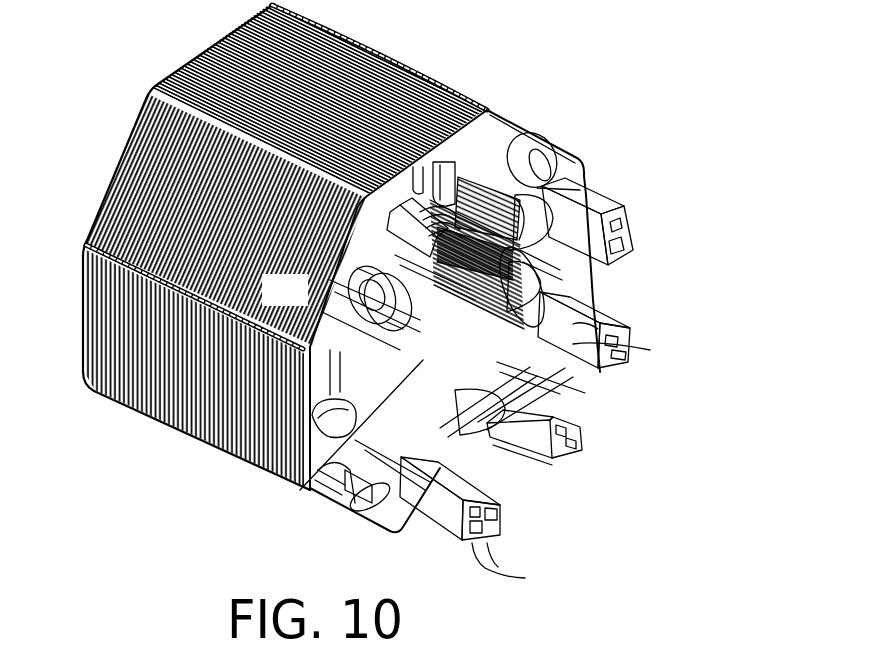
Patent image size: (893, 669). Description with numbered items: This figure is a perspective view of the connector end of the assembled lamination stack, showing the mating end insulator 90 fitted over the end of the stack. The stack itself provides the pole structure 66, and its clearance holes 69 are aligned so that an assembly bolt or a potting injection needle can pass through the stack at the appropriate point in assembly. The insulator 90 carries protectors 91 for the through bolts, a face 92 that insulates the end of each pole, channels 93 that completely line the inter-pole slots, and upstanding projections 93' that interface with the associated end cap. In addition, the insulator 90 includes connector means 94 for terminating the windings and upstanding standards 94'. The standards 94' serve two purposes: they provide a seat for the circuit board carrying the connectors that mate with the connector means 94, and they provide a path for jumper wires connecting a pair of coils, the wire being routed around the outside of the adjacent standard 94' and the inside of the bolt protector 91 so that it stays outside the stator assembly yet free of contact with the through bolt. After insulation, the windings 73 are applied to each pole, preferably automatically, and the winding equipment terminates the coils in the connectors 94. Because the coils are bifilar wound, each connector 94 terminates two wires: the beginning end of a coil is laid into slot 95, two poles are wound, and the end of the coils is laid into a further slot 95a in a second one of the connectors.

The pole structure 66 is at (563, 380).
The clearance holes 69 is at (430, 155).
The windings 73 is at (345, 300).
The insulator 90 is at (577, 275).
The protectors 91 is at (307, 430).
The face 92 is at (522, 128).
The channels 93 is at (534, 466).
The upstanding projections 93' is at (351, 521).
The connector means 94 is at (588, 454).
The upstanding standards 94' is at (310, 514).
The slot 95 is at (516, 573).
The further slot 95a is at (660, 330).